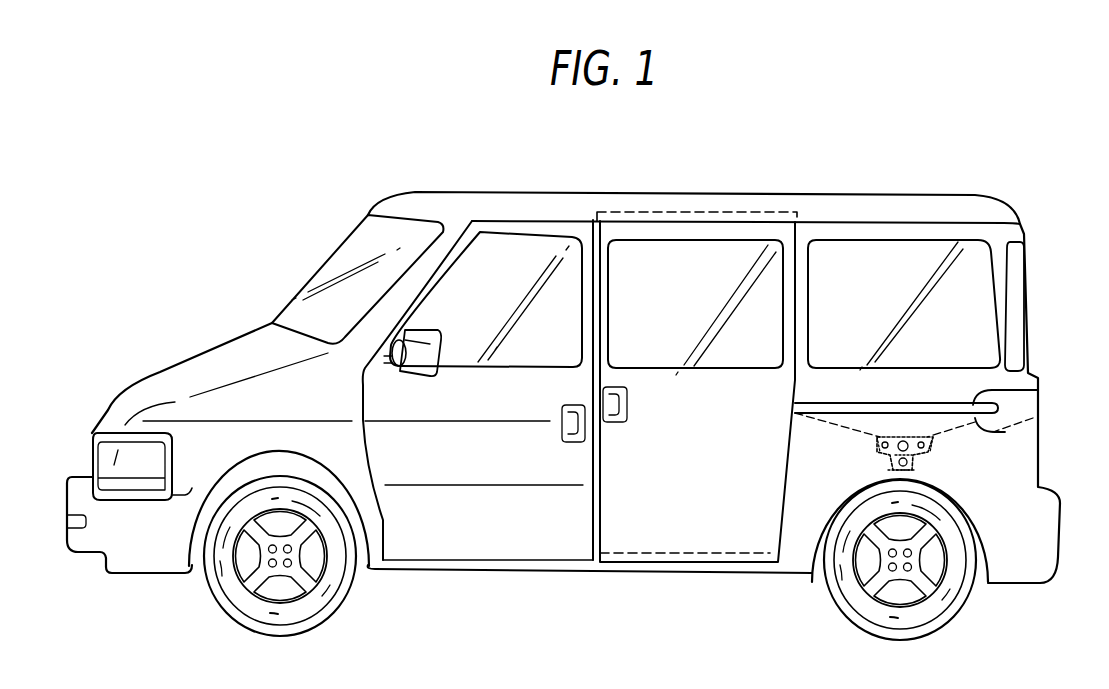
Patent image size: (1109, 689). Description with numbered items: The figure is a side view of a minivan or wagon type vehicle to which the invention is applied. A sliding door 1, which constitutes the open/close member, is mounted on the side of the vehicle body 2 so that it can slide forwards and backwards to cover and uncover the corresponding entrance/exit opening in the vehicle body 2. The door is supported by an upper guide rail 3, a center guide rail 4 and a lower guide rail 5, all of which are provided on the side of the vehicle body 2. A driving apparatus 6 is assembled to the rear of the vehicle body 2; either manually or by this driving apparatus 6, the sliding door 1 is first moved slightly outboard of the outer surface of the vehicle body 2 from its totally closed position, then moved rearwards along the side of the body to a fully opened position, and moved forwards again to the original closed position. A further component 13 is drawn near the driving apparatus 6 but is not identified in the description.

The sliding door 1 is at (803, 235).
The vehicle body 2 is at (537, 191).
The upper guide rail 3 is at (698, 212).
The center guide rail 4 is at (1037, 390).
The lower guide rail 5 is at (660, 546).
The driving apparatus 6 is at (953, 445).
The controller 13 is at (1033, 418).